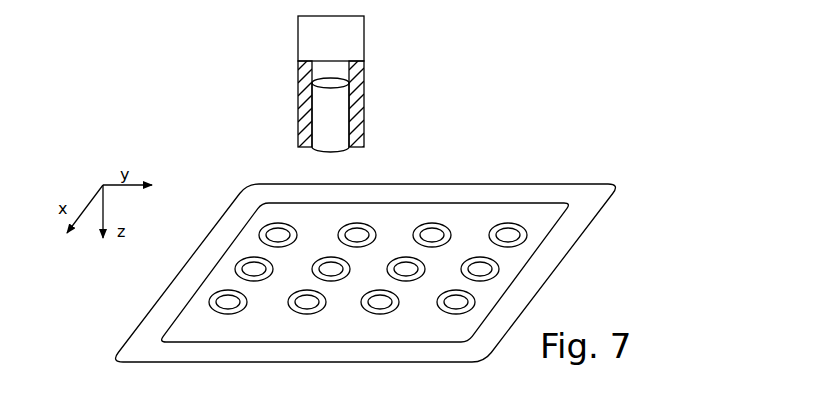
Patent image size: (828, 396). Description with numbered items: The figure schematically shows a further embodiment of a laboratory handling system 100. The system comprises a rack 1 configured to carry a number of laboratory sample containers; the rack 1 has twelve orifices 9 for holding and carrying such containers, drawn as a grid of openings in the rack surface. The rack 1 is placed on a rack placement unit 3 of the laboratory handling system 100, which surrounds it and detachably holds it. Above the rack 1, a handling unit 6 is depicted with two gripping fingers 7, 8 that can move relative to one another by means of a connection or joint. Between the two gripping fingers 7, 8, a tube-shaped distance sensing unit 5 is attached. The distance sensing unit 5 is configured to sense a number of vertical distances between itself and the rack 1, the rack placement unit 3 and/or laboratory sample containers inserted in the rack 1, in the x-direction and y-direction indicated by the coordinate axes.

The laboratory handling system 100 is at (641, 78).
The rack 1 is at (520, 203).
The rack placement unit 3 is at (552, 257).
The distance sensing unit 5 is at (340, 113).
The handling unit 6 is at (351, 36).
The gripping finger 7 is at (346, 90).
The gripping finger 8 is at (300, 105).
The orifices 9 is at (431, 234).